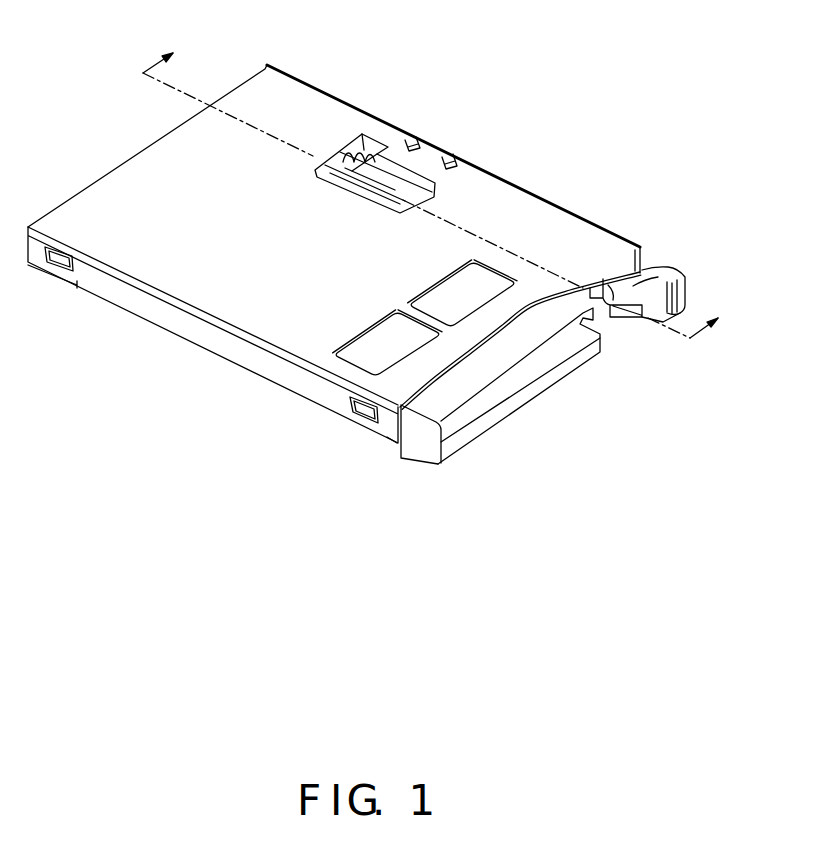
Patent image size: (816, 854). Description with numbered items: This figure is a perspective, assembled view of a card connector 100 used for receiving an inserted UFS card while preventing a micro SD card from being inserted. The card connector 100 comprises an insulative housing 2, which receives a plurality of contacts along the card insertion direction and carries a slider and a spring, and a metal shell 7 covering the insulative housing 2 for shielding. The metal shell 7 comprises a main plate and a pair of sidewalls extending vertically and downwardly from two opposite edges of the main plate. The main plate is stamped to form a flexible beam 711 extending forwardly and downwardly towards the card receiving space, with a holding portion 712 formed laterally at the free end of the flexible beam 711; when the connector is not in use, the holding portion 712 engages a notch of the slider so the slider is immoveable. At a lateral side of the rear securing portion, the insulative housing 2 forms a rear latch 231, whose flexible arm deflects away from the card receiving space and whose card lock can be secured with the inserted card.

The card connector 100 is at (380, 240).
The insulative housing 2 is at (552, 336).
The metal shell 7 is at (334, 226).
The flexible beam 711 is at (373, 185).
The holding portion 712 is at (401, 124).
The rear latch 231 is at (635, 286).